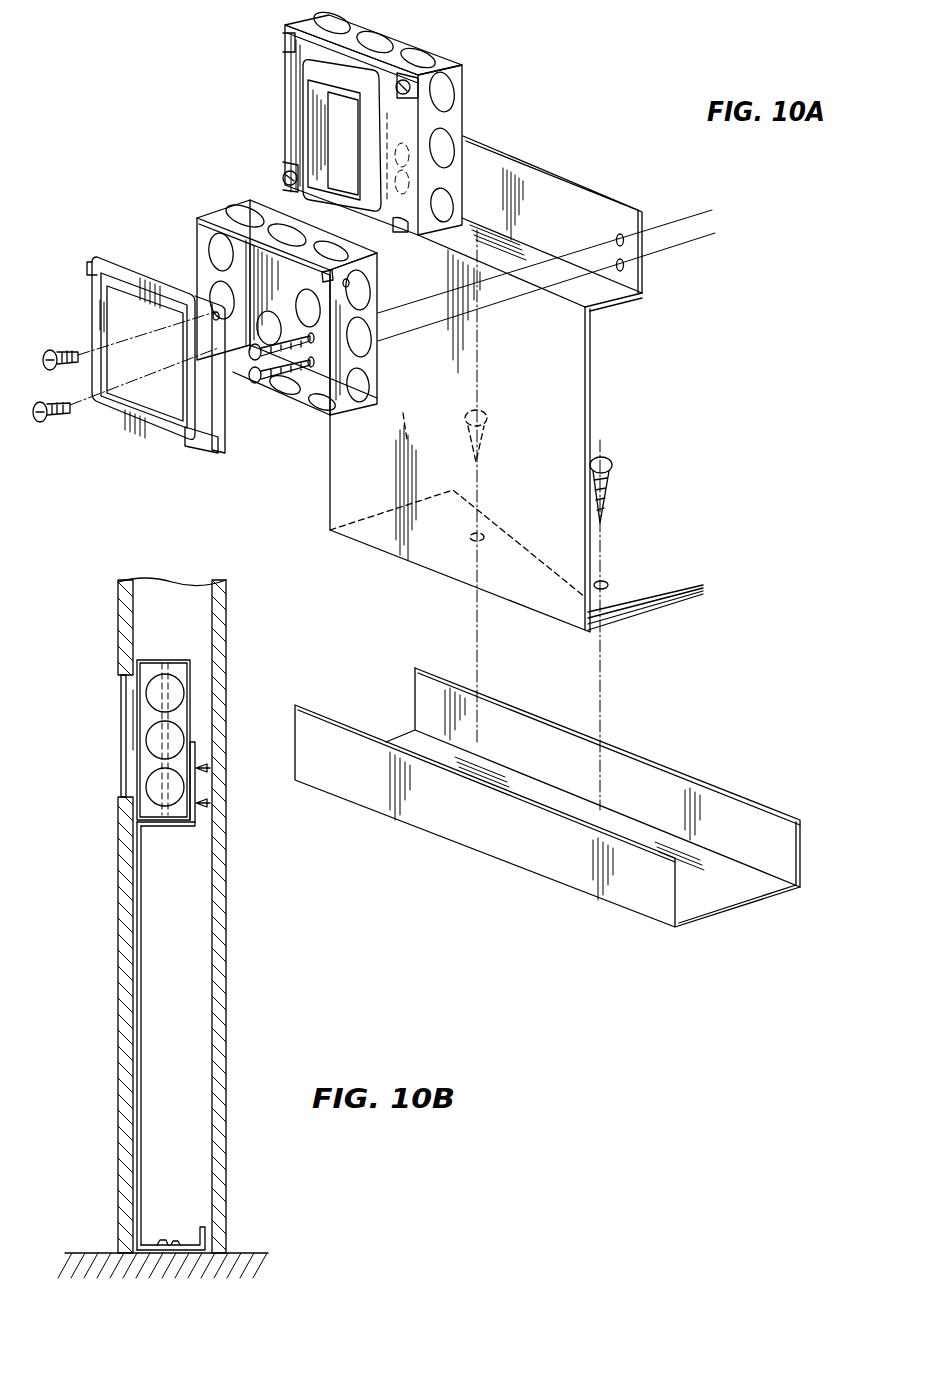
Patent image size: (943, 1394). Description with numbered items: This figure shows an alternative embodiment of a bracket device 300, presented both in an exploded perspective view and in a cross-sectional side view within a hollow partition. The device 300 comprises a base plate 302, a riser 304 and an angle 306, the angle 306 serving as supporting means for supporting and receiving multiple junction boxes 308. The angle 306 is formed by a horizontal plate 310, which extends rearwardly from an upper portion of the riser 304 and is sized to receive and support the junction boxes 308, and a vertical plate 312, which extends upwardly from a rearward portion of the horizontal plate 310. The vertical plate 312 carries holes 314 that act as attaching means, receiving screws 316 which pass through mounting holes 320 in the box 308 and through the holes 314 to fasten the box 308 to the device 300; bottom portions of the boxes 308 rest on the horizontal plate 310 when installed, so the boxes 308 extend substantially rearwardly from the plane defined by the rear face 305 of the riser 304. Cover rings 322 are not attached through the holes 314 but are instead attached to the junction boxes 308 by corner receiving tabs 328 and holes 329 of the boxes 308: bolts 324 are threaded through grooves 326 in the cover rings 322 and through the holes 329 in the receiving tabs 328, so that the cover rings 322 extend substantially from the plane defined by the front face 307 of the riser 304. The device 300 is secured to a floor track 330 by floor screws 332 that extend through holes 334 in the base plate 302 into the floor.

In FIG. 10A, the bracket device 300 is at (667, 603).
In FIG. 10B, the bracket device 300 is at (173, 955).
In FIG. 10A, the base plate 302 is at (645, 607).
In FIG. 10B, the base plate 302 is at (195, 1243).
In FIG. 10A, the riser 304 is at (553, 384).
In FIG. 10B, the riser 304 is at (168, 1018).
In FIG. 10B, the rear face 305 is at (168, 1072).
In FIG. 10A, the angle 306 is at (644, 294).
In FIG. 10B, the front face 307 is at (133, 1092).
In FIG. 10A, the junction box 308 is at (394, 67).
In FIG. 10B, the junction box 308 is at (187, 625).
In FIG. 10A, the horizontal plate 310 is at (598, 294).
In FIG. 10B, the horizontal plate 310 is at (167, 829).
In FIG. 10A, the vertical plate 312 is at (616, 202).
In FIG. 10B, the vertical plate 312 is at (197, 751).
In FIG. 10A, the holes 314 is at (626, 246).
In FIG. 10A, the screws 316 is at (257, 362).
In FIG. 10B, the screws 316 is at (208, 803).
In FIG. 10A, the mounting holes 320 is at (312, 362).
In FIG. 10A, the cover ring 322 is at (285, 80).
In FIG. 10B, the cover ring 322 is at (122, 693).
In FIG. 10A, the bolts 324 is at (416, 82).
In FIG. 10A, the grooves 326 is at (414, 102).
In FIG. 10A, the corner receiving tabs 328 is at (362, 287).
In FIG. 10A, the holes 329 is at (335, 276).
In FIG. 10A, the floor track 330 is at (805, 826).
In FIG. 10B, the floor track 330 is at (90, 1253).
In FIG. 10A, the floor screws 332 is at (489, 413).
In FIG. 10B, the floor screws 332 is at (173, 1233).
In FIG. 10A, the holes 334 is at (480, 539).